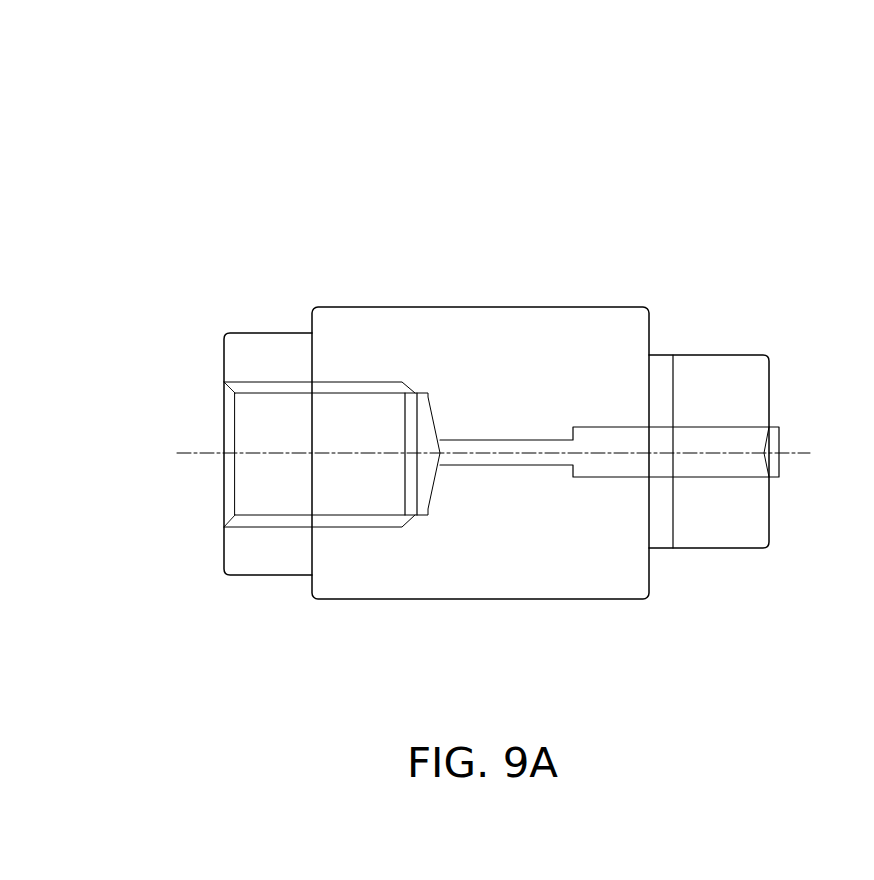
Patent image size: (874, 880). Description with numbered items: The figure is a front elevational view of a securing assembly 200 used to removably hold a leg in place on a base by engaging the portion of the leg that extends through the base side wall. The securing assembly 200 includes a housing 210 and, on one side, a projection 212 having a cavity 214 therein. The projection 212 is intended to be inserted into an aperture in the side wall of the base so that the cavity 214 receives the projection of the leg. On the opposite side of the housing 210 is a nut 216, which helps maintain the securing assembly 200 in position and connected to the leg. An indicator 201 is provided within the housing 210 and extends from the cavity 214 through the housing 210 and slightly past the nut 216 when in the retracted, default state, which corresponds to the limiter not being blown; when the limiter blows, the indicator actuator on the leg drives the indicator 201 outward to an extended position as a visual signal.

The securing assembly 200 is at (257, 117).
The indicator 201 is at (782, 440).
The housing 210 is at (531, 314).
The projection 212 is at (263, 333).
The cavity 214 is at (283, 470).
The nut 216 is at (720, 535).